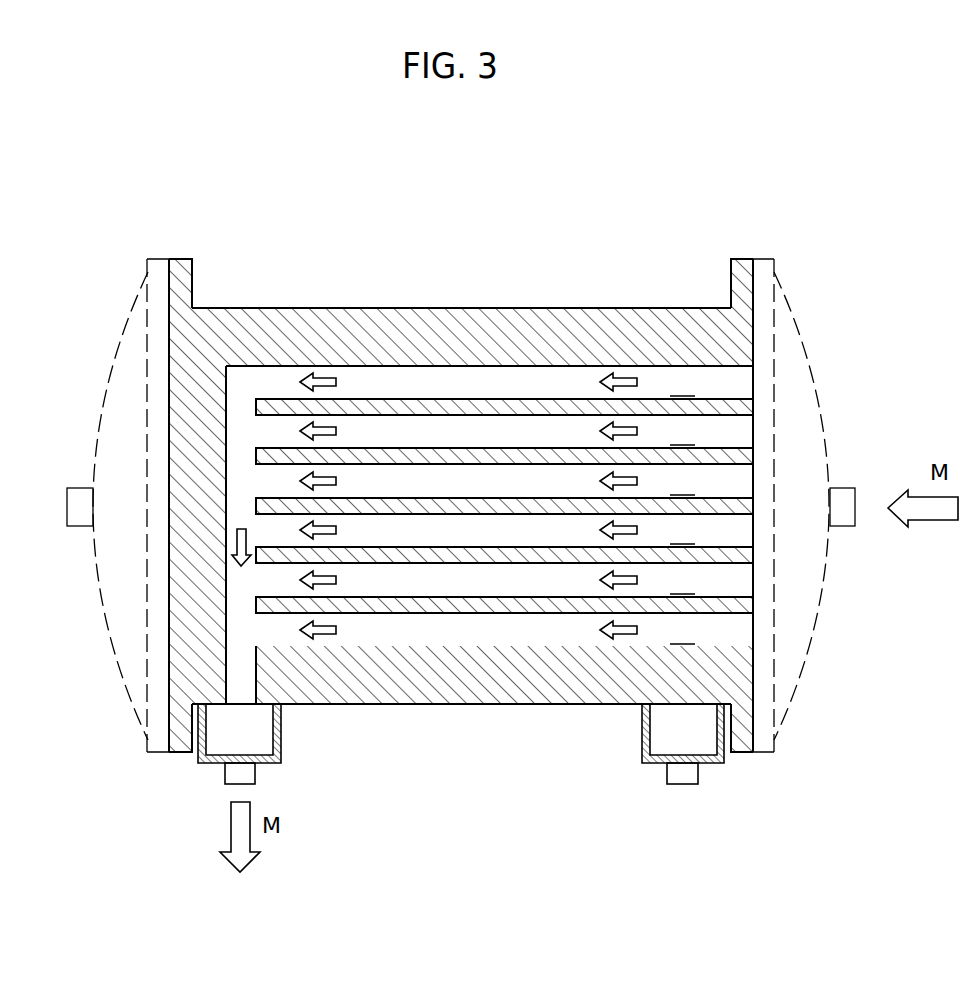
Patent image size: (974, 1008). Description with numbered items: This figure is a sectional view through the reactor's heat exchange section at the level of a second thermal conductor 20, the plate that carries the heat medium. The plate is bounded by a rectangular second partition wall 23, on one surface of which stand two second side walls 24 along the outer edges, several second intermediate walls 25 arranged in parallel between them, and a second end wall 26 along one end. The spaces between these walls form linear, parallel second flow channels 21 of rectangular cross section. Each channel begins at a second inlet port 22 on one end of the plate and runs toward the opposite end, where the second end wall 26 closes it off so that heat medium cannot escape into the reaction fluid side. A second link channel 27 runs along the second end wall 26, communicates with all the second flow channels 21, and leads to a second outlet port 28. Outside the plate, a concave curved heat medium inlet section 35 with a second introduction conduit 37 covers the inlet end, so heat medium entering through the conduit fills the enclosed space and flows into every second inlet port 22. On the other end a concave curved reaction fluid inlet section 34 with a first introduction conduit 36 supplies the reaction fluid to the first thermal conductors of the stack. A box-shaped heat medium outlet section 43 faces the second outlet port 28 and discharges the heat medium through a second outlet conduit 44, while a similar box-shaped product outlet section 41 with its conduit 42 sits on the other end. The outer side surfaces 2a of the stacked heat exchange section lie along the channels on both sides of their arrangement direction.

The second thermal conductor 20 is at (467, 308).
The side surface 2a is at (263, 308).
The second side wall 24 is at (345, 322).
The second partition wall 23 is at (545, 380).
The second end wall 26 is at (197, 452).
The second link channel 27 is at (242, 500).
The second outlet port 28 is at (235, 672).
The second intermediate wall 25 is at (430, 400).
The second flow channel 21 is at (499, 508).
The second inlet port 22 is at (753, 382).
The reaction fluid inlet section 34 is at (125, 360).
The heat medium inlet section 35 is at (797, 365).
The first introduction conduit 36 is at (72, 488).
The second introduction conduit 37 is at (843, 486).
The product outlet section 41 is at (642, 737).
The pipe 42 is at (667, 780).
The heat medium outlet section 43 is at (281, 737).
The second outlet conduit 44 is at (255, 775).